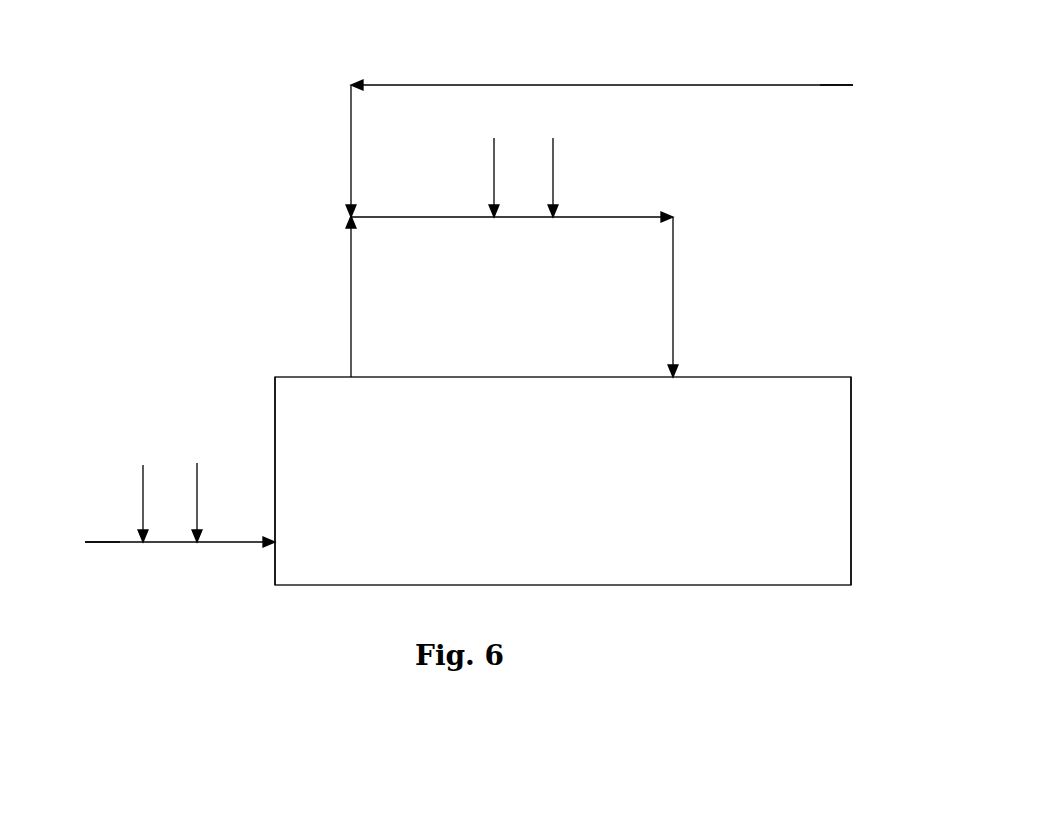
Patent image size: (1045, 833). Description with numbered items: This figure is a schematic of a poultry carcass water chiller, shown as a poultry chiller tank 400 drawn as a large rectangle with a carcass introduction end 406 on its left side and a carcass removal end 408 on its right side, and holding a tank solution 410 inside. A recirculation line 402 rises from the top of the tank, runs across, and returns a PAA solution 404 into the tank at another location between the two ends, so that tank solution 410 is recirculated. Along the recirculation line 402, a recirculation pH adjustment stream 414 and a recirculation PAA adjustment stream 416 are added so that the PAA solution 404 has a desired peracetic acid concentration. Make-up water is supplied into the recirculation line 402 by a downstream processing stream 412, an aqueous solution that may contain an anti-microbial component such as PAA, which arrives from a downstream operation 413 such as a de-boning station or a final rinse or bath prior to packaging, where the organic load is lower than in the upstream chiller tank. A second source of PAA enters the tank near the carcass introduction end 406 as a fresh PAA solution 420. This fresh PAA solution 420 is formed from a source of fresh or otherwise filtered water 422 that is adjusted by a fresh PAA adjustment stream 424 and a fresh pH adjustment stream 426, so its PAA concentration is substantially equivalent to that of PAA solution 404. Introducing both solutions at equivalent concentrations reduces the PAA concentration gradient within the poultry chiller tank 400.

The poultry chiller tank 400 is at (705, 585).
The recirculation line 402 is at (351, 287).
The PAA solution 404 is at (676, 283).
The carcass introduction end 406 is at (275, 407).
The carcass removal end 408 is at (851, 427).
The tank solution 410 is at (597, 525).
The downstream processing stream 412 is at (640, 85).
The downstream operation 413 is at (868, 96).
The recirculation pH adjustment stream 414 is at (494, 165).
The recirculation PAA adjustment stream 416 is at (556, 170).
The fresh PAA solution 420 is at (232, 543).
The fresh or otherwise filtered water 422 is at (74, 551).
The fresh PAA adjustment stream 424 is at (200, 490).
The fresh pH adjustment stream 426 is at (145, 490).